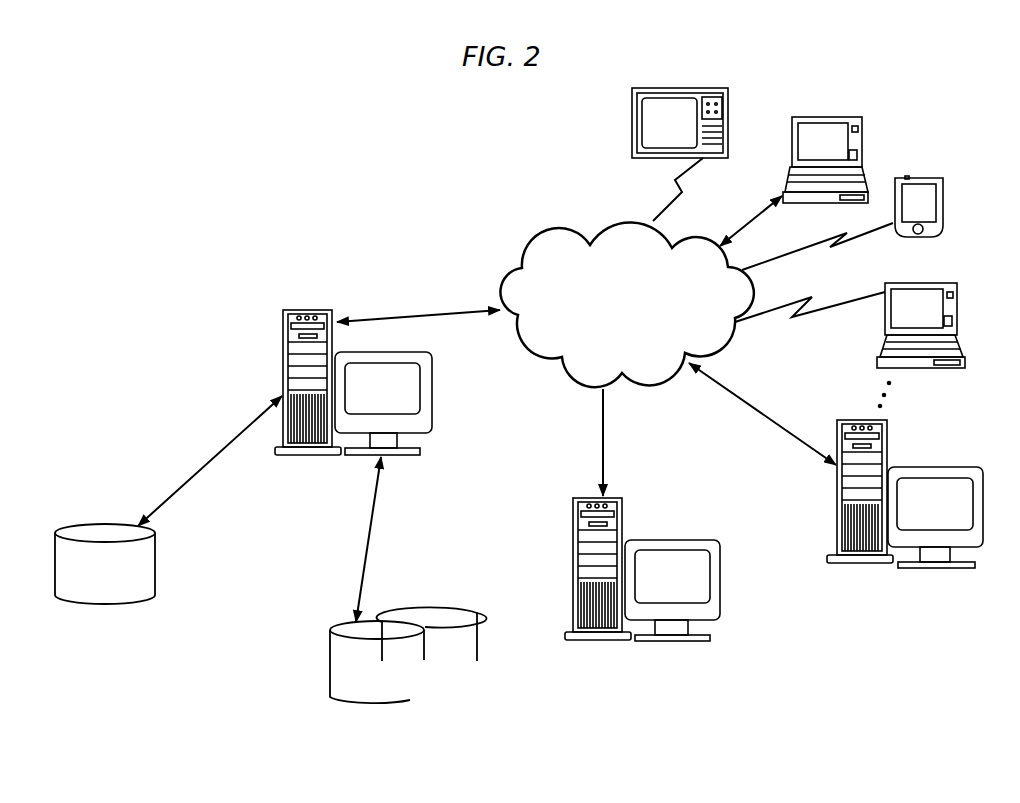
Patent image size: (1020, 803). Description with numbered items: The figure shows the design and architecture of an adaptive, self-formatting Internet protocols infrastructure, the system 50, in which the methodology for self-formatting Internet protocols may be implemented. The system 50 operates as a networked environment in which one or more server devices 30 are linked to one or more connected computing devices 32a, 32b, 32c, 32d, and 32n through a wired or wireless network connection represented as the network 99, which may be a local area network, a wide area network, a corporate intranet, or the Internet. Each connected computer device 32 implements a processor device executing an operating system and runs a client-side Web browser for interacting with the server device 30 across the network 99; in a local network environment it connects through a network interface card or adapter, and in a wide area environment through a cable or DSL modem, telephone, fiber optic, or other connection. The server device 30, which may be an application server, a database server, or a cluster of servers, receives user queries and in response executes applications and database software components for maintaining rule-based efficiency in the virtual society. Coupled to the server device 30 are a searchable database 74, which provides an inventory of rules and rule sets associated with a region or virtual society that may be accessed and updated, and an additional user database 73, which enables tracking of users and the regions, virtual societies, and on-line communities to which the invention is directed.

The system 50 is at (184, 170).
The network 99 is at (540, 232).
The server device 30 is at (283, 322).
The computer device 32 is at (678, 540).
The connected computing device 32a is at (714, 88).
The connected computing device 32b is at (862, 117).
The connected computing device 32c is at (943, 190).
The connected computing device 32d is at (958, 290).
The connected computing device 32n is at (960, 467).
The user database 73 is at (72, 525).
The searchable database 74 is at (330, 650).